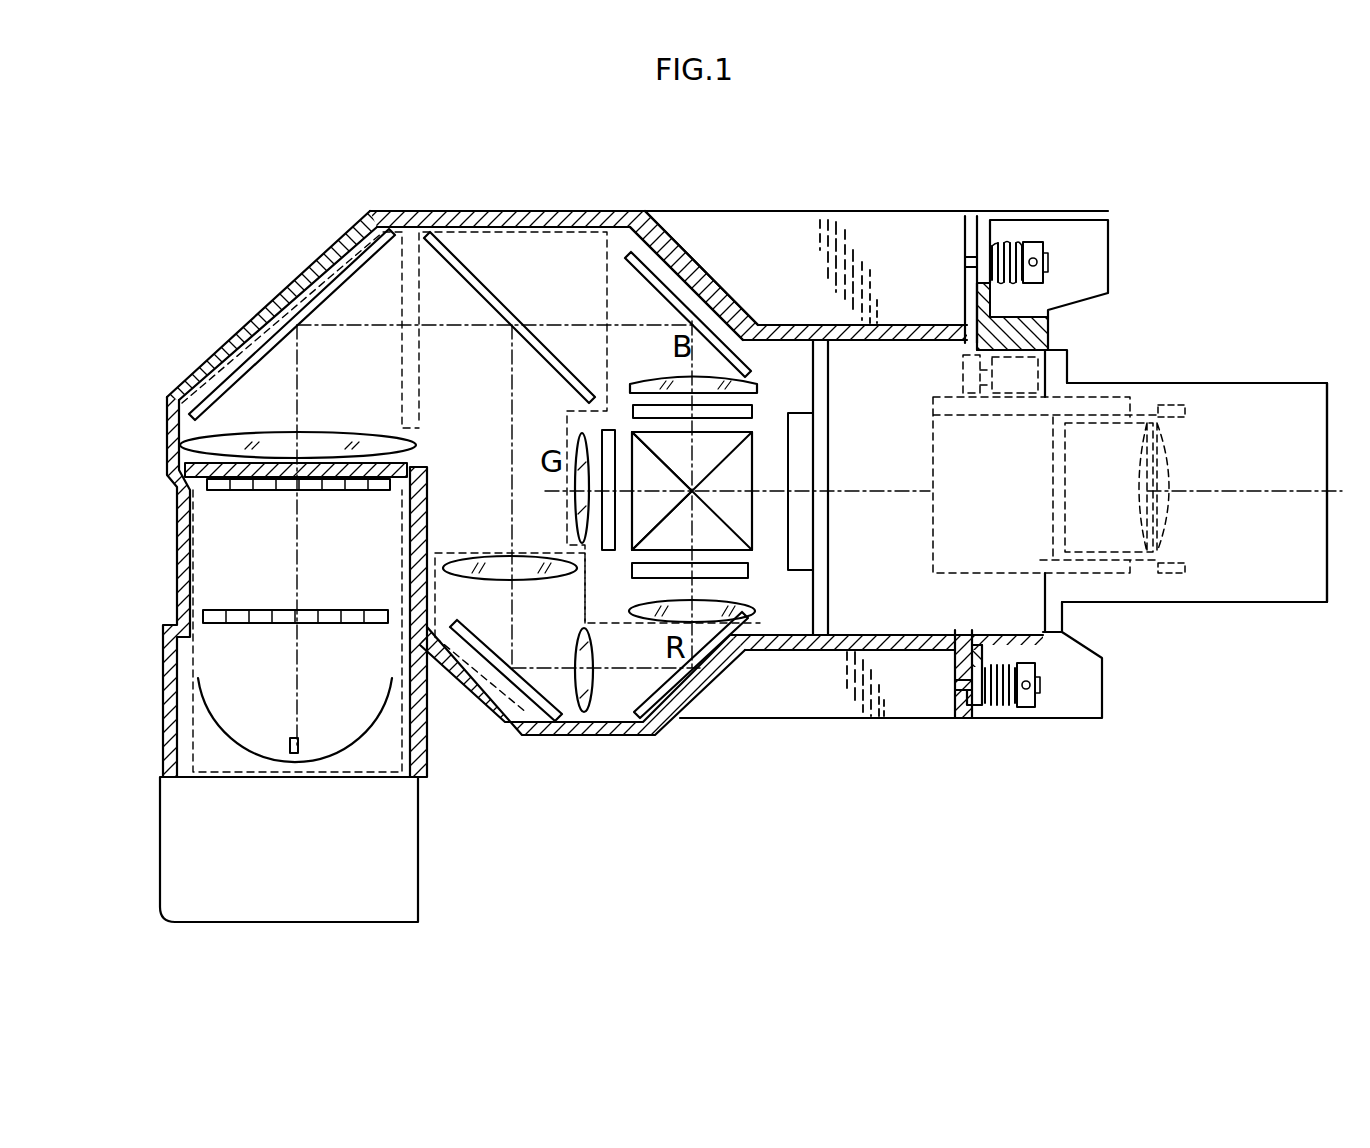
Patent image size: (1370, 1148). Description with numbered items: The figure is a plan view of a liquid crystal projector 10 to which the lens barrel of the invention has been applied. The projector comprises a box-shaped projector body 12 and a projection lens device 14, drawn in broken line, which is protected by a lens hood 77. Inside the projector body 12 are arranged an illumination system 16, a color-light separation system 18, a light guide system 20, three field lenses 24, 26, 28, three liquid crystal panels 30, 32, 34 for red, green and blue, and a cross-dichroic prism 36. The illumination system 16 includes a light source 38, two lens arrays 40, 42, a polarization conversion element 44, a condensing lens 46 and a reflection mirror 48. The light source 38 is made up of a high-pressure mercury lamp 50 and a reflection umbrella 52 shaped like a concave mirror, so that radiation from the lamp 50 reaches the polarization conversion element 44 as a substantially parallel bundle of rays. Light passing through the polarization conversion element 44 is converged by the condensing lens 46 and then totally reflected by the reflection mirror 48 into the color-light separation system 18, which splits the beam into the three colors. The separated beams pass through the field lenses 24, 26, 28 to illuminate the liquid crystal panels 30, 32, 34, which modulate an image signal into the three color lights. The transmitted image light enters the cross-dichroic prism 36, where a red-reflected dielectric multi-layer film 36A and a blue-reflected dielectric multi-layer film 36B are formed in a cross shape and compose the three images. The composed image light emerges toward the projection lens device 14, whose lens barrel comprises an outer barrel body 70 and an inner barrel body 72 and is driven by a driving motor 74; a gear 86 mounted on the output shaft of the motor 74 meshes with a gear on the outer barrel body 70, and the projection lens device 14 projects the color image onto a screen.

The liquid crystal projector 10 is at (870, 172).
The projector body 12 is at (948, 214).
The projection lens device 14 is at (1122, 478).
The illumination system 16 is at (180, 548).
The color-light separation system 18 is at (500, 222).
The light guide system 20 is at (478, 704).
The field lens 24 is at (755, 612).
The field lens 26 is at (583, 545).
The field lens 28 is at (650, 378).
The liquid crystal panel 30 is at (748, 577).
The liquid crystal panel 32 is at (605, 430).
The liquid crystal panel 34 is at (752, 412).
The cross-dichroic prism 36 is at (752, 510).
The red-reflected dielectric multi-layer film 36A is at (667, 517).
The blue-reflected dielectric multi-layer film 36B is at (655, 452).
The light source 38 is at (232, 745).
The lens array 40 is at (341, 610).
The lens array 42 is at (338, 491).
The polarization conversion element 44 is at (264, 465).
The condensing lens 46 is at (357, 431).
The reflection mirror 48 is at (372, 258).
The high-pressure mercury lamp 50 is at (300, 745).
The reflection umbrella 52 is at (226, 732).
The outer barrel body 70 is at (1108, 398).
The inner barrel body 72 is at (1172, 405).
The driving motor 74 is at (1048, 337).
The lens hood 77 is at (1278, 383).
The gear 86 is at (963, 373).